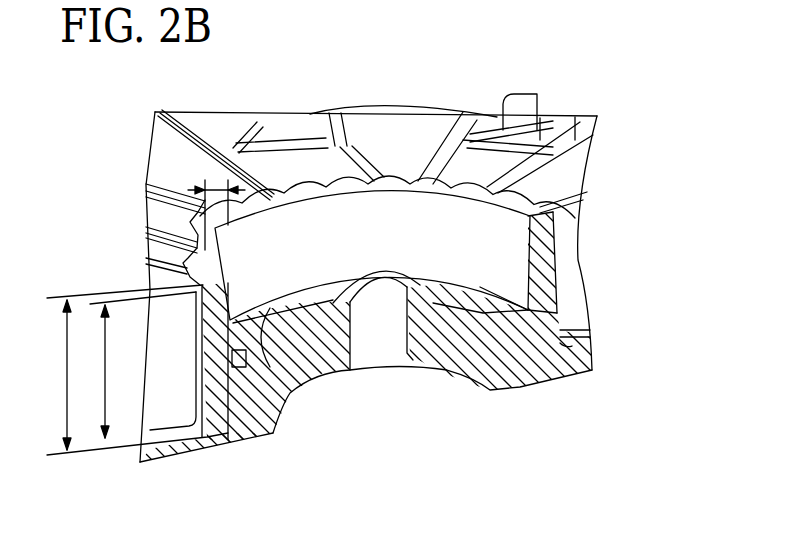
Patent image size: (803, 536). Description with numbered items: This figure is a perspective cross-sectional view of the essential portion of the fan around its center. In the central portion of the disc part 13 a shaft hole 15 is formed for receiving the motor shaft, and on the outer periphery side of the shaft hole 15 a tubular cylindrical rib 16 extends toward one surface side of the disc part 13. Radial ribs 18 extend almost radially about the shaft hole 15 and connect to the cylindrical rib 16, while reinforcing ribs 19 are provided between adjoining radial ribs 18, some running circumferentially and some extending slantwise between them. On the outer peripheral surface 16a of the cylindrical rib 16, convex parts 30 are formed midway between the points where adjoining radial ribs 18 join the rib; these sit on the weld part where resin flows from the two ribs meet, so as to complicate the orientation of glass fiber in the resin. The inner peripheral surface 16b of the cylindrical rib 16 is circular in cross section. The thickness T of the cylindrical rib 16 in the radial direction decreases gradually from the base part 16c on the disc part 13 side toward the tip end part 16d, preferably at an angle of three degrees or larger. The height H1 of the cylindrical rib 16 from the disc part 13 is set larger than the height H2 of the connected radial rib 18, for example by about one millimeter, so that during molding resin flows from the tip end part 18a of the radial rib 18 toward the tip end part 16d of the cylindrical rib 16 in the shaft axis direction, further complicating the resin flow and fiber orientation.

The disc part 13 is at (168, 453).
The shaft hole 15 is at (362, 337).
The cylindrical rib 16 is at (286, 396).
The outer peripheral surface 16a is at (557, 285).
The inner peripheral surface 16b is at (262, 265).
The base part 16c is at (193, 433).
The tip end part 16d is at (187, 257).
The radial rib 18 is at (318, 115).
The tip end part of the radial rib 18a is at (580, 184).
The reinforcing rib 19 is at (528, 117).
The convex part 30 is at (273, 117).
The thickness T is at (216, 208).
The height of the cylindrical rib H1 is at (56, 375).
The height of the radial rib H2 is at (105, 371).